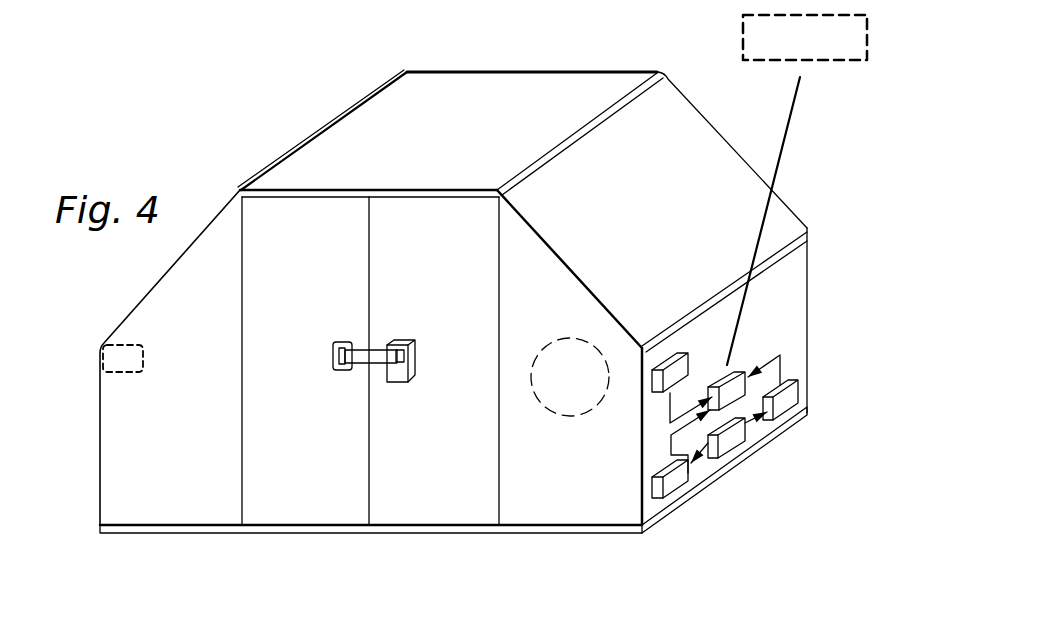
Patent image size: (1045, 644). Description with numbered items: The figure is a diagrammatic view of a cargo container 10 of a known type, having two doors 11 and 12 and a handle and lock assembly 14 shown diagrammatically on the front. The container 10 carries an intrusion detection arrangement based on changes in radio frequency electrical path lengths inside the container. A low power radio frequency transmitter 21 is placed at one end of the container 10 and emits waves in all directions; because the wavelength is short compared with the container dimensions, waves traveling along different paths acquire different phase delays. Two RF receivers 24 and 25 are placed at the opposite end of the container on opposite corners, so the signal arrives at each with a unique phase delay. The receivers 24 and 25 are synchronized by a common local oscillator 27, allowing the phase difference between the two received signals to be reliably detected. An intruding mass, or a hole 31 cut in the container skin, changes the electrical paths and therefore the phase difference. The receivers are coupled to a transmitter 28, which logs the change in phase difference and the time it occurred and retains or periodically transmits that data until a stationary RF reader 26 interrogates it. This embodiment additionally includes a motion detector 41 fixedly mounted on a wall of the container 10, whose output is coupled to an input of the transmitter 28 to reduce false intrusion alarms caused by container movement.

The cargo container 10 is at (455, 84).
The door 11 is at (320, 508).
The door 12 is at (447, 508).
The handle and lock assembly 14 is at (365, 362).
The radio frequency transmitter 21 is at (120, 376).
The RF receiver 24 is at (675, 480).
The RF receiver 25 is at (787, 403).
The RF reader 26 is at (867, 40).
The local oscillator 27 is at (732, 442).
The transmitter 28 is at (718, 385).
The hole 31 is at (572, 415).
The motion detector 41 is at (671, 355).